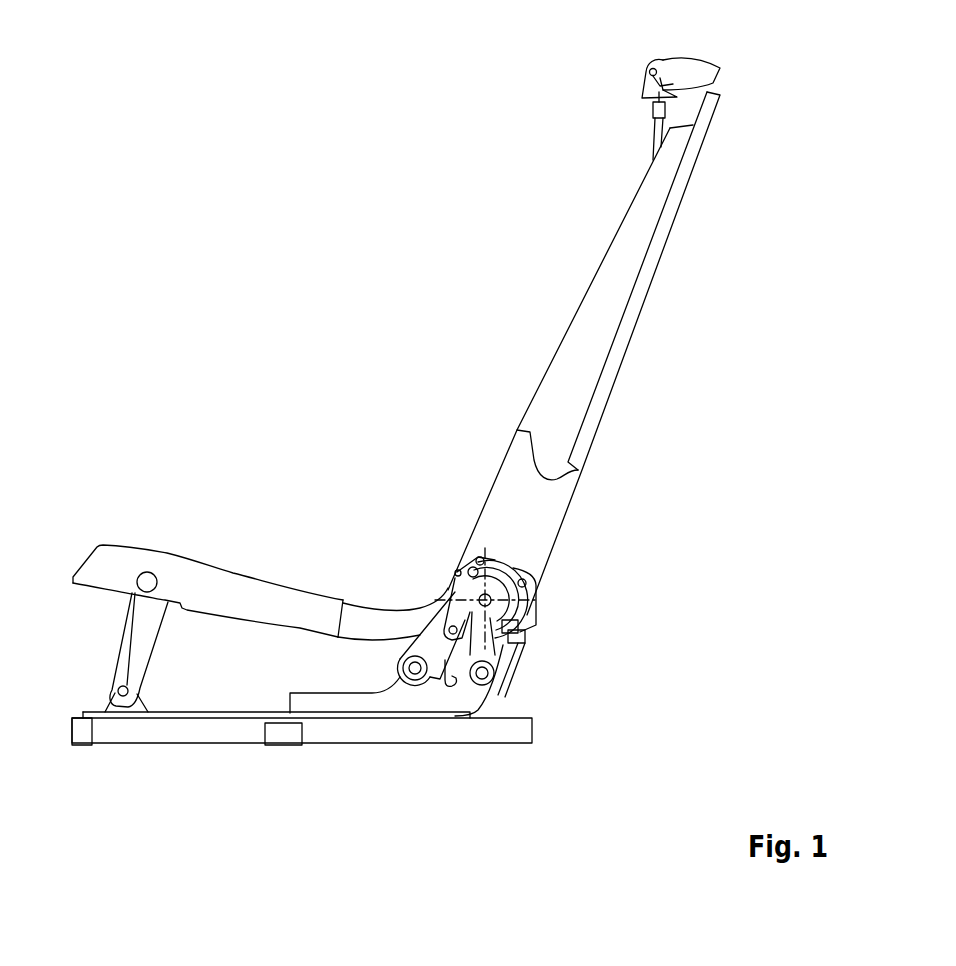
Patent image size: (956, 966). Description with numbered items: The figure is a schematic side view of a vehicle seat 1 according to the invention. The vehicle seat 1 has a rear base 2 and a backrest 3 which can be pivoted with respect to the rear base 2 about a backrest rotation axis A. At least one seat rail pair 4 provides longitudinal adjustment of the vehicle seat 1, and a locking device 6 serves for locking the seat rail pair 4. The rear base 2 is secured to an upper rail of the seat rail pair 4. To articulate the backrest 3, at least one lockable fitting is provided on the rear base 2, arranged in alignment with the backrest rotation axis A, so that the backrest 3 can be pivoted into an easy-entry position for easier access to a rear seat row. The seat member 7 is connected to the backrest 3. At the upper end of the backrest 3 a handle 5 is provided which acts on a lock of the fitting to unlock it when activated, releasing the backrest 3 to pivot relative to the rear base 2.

The vehicle seat 1 is at (276, 146).
The rear base 2 is at (423, 693).
The backrest 3 is at (617, 290).
The seat rail pair 4 is at (228, 733).
The handle 5 is at (685, 60).
The locking device 6 is at (290, 733).
The seat member 7 is at (263, 602).
The backrest rotation axis A is at (488, 596).